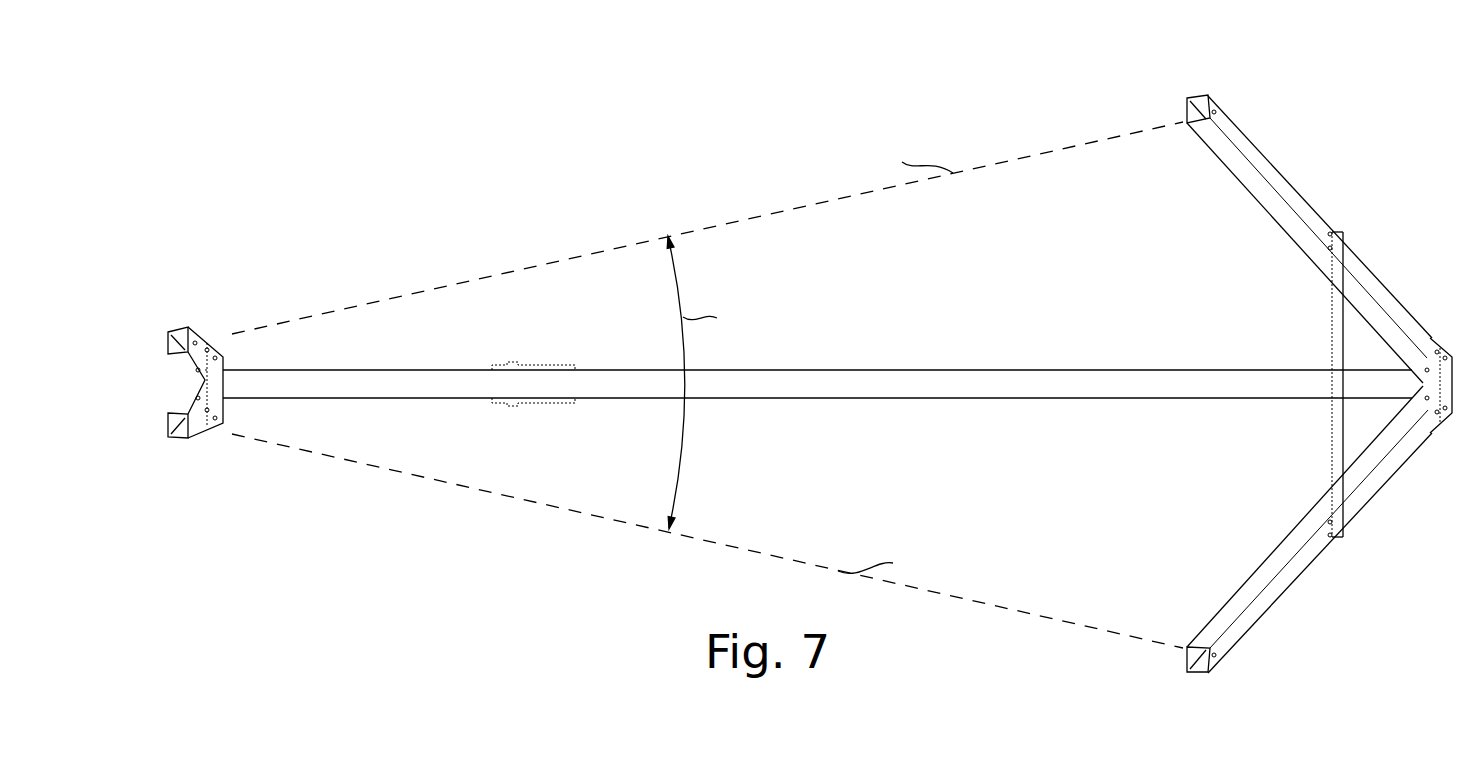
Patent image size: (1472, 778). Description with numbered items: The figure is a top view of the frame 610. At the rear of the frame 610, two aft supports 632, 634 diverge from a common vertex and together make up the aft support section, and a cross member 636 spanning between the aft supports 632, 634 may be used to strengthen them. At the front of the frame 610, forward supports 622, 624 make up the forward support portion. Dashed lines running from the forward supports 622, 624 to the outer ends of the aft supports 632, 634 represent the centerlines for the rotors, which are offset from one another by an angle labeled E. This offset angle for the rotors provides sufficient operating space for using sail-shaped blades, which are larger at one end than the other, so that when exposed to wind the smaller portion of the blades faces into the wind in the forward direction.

The frame 610 is at (678, 120).
The forward support 622 is at (167, 341).
The forward support 624 is at (167, 426).
The aft support 632 is at (1250, 193).
The aft support 634 is at (1280, 597).
The cross member 636 is at (1332, 325).